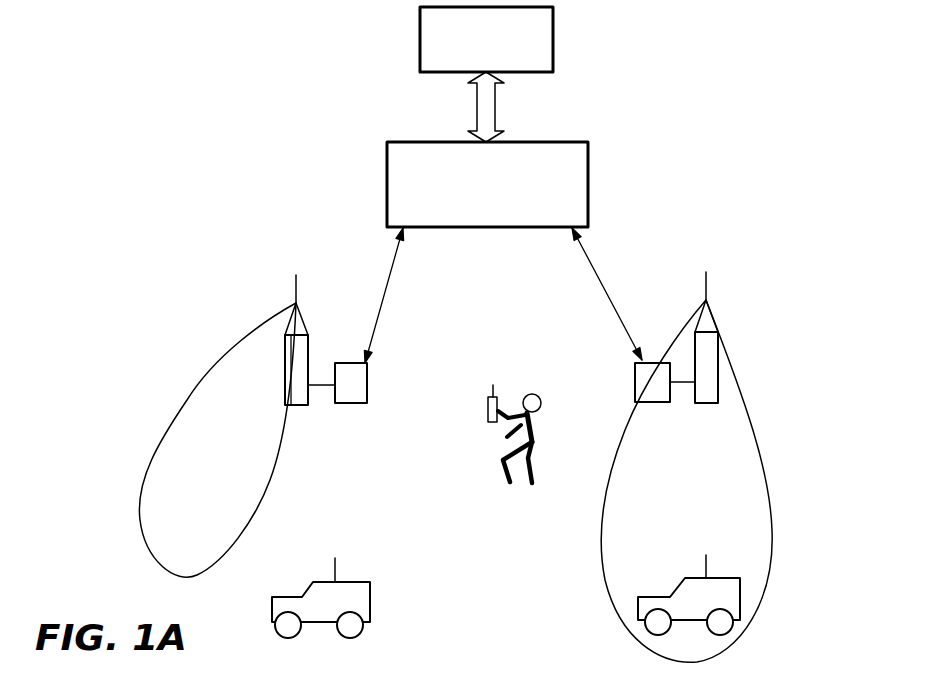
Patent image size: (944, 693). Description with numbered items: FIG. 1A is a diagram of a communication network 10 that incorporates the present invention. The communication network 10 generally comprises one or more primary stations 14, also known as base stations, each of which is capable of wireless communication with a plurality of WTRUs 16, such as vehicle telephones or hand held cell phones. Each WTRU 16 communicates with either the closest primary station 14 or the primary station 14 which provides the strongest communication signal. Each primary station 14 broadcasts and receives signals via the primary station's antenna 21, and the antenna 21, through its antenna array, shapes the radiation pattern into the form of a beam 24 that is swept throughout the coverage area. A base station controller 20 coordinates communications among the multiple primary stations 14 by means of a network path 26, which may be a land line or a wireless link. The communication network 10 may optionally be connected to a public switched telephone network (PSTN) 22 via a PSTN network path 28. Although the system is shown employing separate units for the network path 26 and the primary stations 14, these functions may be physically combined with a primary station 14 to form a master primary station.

The communication network 10 is at (292, 167).
The primary station 14 is at (302, 407).
The WTRU 16 is at (370, 600).
The base station controller 20 is at (583, 180).
The antenna 21 is at (293, 298).
The public switched telephone network (PSTN) 22 is at (553, 43).
The beam 24 is at (182, 390).
The network path 26 is at (388, 282).
The PSTN network path 28 is at (495, 103).